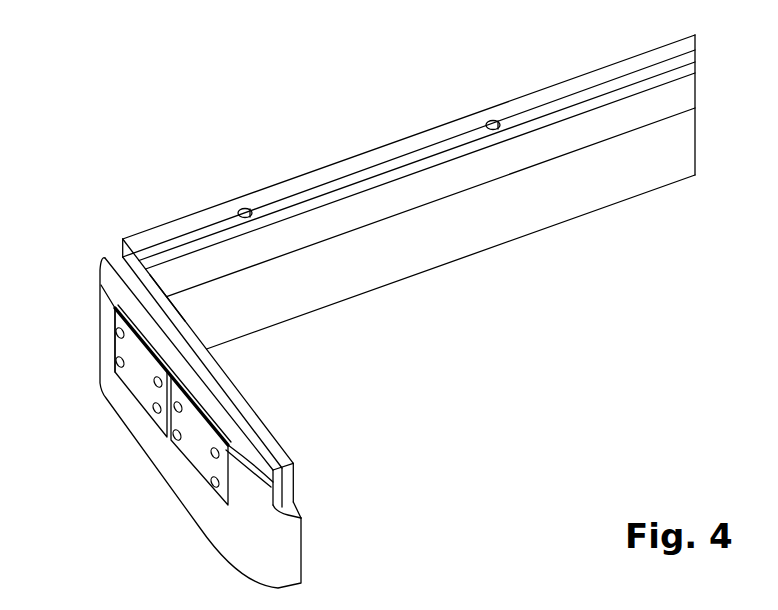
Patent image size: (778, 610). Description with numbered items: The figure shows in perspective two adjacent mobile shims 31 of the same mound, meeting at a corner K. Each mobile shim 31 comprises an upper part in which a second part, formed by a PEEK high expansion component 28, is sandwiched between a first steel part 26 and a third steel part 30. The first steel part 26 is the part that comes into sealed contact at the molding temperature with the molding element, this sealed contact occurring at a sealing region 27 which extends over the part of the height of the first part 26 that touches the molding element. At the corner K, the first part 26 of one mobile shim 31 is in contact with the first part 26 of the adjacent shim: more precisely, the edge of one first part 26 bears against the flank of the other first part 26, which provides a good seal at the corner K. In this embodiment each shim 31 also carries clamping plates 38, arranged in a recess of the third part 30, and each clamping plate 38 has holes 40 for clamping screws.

The first steel part 26 is at (301, 212).
The sealing region 27 is at (415, 188).
The PEEK high expansion component 28 is at (383, 170).
The third steel part 30 is at (510, 112).
The mobile shim 31 is at (562, 223).
The clamping plate 38 is at (147, 393).
The hole 40 is at (118, 347).
The corner K is at (157, 272).